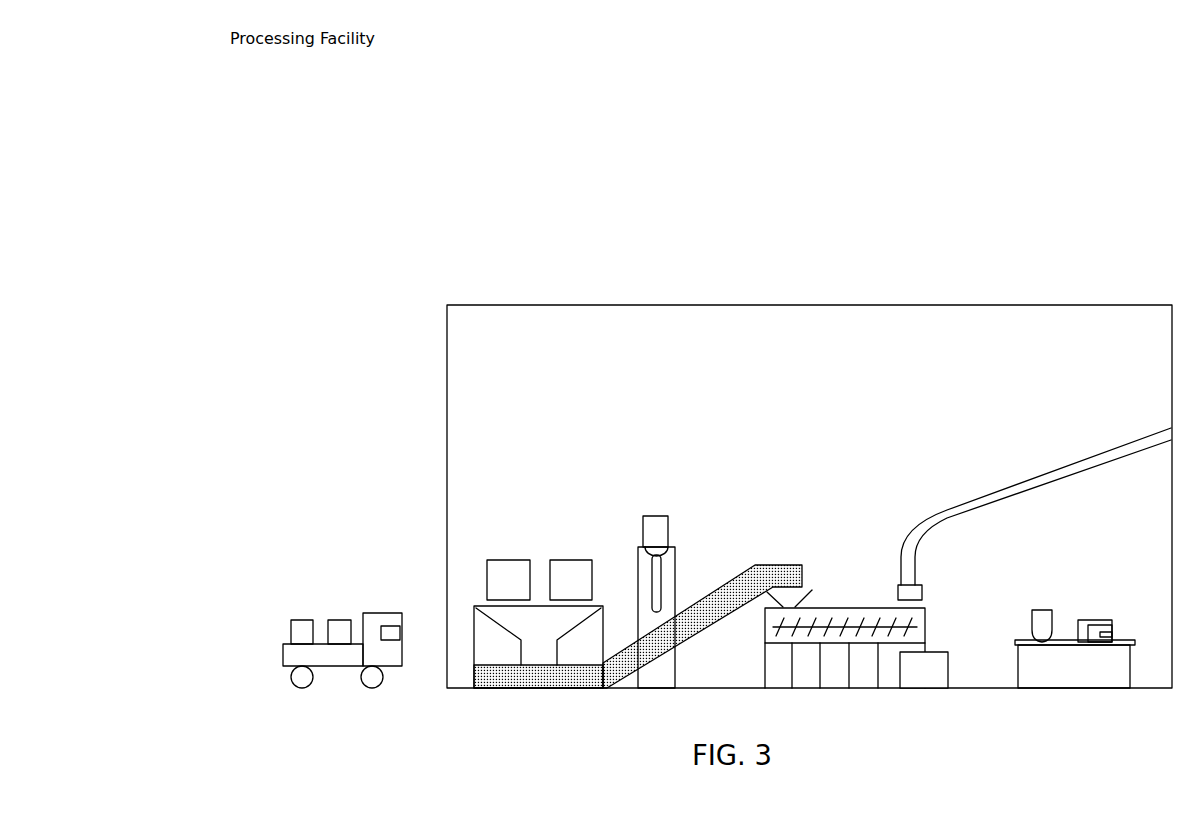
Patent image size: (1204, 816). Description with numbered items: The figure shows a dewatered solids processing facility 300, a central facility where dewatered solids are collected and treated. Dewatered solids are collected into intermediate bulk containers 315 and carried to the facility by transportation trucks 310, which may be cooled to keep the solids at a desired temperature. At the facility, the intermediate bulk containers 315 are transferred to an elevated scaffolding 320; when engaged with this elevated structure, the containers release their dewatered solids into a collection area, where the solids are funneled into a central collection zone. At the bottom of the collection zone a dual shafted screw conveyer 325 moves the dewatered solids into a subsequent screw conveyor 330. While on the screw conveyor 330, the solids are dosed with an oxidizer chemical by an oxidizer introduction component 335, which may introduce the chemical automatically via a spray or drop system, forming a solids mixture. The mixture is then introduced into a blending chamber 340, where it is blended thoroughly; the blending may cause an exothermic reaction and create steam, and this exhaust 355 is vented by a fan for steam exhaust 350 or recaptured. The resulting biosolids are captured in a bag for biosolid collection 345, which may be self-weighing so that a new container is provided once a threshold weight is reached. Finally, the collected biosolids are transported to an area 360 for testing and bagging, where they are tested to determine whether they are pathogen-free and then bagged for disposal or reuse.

The dewatered solids processing facility 300 is at (1100, 298).
The transportation trucks 310 is at (564, 59).
The intermediate bulk containers 315 is at (564, 81).
The elevated scaffolding 320 is at (553, 103).
The dual shafted screw conveyer 325 is at (564, 124).
The screw conveyor 330 is at (553, 146).
The oxidizer introduction component 335 is at (553, 168).
The blending chamber 340 is at (553, 190).
The bag for biosolid collection 345 is at (553, 212).
The fan for steam exhaust 350 is at (553, 233).
The exhaust 355 is at (553, 255).
The area for testing and bagging 360 is at (553, 277).